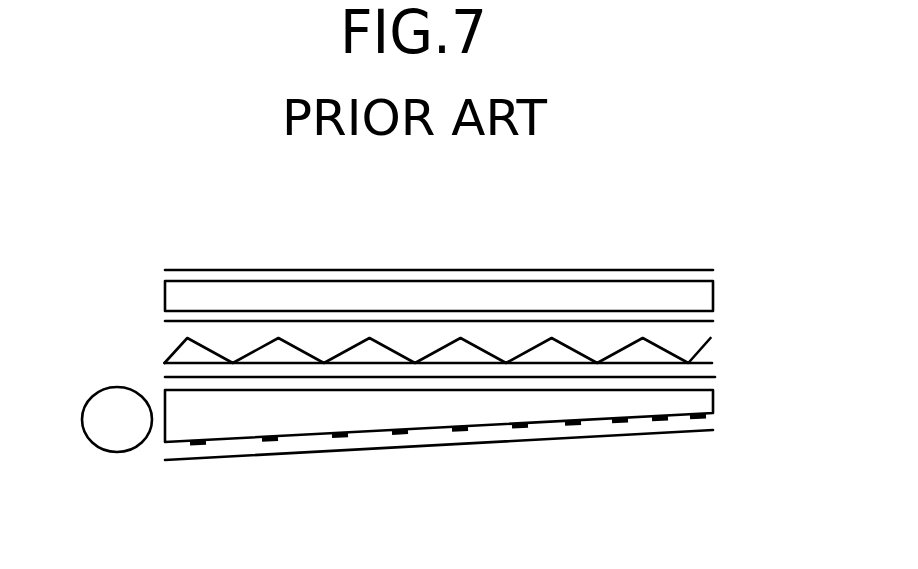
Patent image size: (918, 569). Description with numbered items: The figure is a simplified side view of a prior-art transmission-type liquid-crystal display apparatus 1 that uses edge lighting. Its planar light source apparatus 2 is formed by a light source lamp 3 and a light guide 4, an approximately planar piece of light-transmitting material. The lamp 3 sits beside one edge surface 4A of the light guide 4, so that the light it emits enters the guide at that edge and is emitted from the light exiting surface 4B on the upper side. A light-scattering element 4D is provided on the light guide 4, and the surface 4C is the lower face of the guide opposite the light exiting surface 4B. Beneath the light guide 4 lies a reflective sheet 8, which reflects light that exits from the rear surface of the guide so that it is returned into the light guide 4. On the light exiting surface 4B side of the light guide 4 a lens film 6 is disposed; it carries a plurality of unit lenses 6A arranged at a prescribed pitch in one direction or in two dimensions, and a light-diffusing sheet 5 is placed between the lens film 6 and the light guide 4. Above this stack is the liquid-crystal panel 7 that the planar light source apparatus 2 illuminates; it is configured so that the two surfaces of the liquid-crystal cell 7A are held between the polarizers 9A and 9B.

The transmission-type liquid-crystal display apparatus 1 is at (151, 225).
The planar light source apparatus 2 is at (444, 428).
The light source lamp 3 is at (103, 438).
The light guide 4 is at (418, 428).
The edge surface 4A is at (165, 418).
The light exiting surface 4B is at (178, 388).
The bottom surface of light guide plate 4C is at (485, 427).
The light-scattering element 4D is at (267, 440).
The light-diffusing sheet 5 is at (170, 377).
The lens film 6 is at (421, 307).
The unit lenses 6A is at (176, 358).
The liquid-crystal panel 7 is at (509, 289).
The liquid-crystal cell 7A is at (713, 296).
The reflective sheet 8 is at (470, 449).
The polarizer 9A is at (713, 270).
The polarizer 9B is at (713, 321).